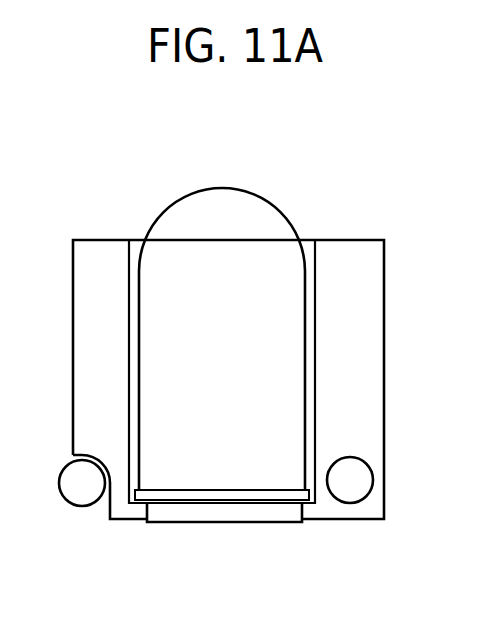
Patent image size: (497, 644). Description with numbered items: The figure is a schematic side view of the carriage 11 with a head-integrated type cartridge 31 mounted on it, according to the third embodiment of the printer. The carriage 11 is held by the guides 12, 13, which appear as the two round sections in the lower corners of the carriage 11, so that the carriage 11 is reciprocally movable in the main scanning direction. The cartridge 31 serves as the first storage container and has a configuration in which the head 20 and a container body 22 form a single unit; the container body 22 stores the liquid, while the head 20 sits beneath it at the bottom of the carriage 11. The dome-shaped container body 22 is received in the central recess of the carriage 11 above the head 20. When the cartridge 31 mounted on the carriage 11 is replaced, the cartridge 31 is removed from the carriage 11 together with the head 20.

The carriage 11 is at (365, 325).
The guide 12 is at (350, 487).
The guide 13 is at (80, 495).
The head 20 is at (217, 513).
The container body 22 is at (253, 243).
The head-integrated type cartridge 31 is at (160, 203).